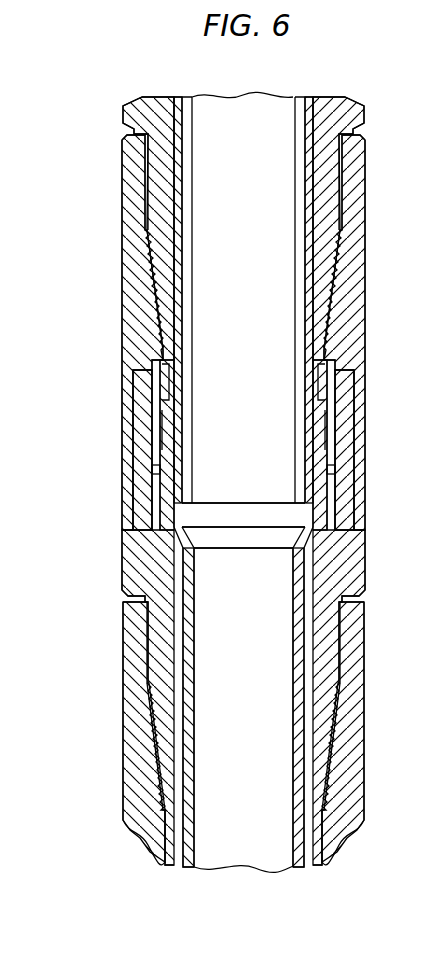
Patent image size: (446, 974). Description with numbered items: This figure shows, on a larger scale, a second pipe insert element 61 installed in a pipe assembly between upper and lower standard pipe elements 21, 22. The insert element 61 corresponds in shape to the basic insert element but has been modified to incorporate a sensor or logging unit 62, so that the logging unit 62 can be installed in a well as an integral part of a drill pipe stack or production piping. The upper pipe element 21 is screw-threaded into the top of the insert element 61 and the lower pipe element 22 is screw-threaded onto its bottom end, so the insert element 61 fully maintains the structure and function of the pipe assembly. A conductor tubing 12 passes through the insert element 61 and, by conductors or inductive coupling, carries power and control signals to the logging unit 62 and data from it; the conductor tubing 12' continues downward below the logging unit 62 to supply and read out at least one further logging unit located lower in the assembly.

The conductor tubing 12 is at (261, 287).
The conductor tubing 12' is at (238, 728).
The upper standard pipe element 21 is at (150, 103).
The lower standard pipe element 22 is at (343, 855).
The pipe insert element 61 is at (118, 296).
The logging unit 62 is at (135, 431).